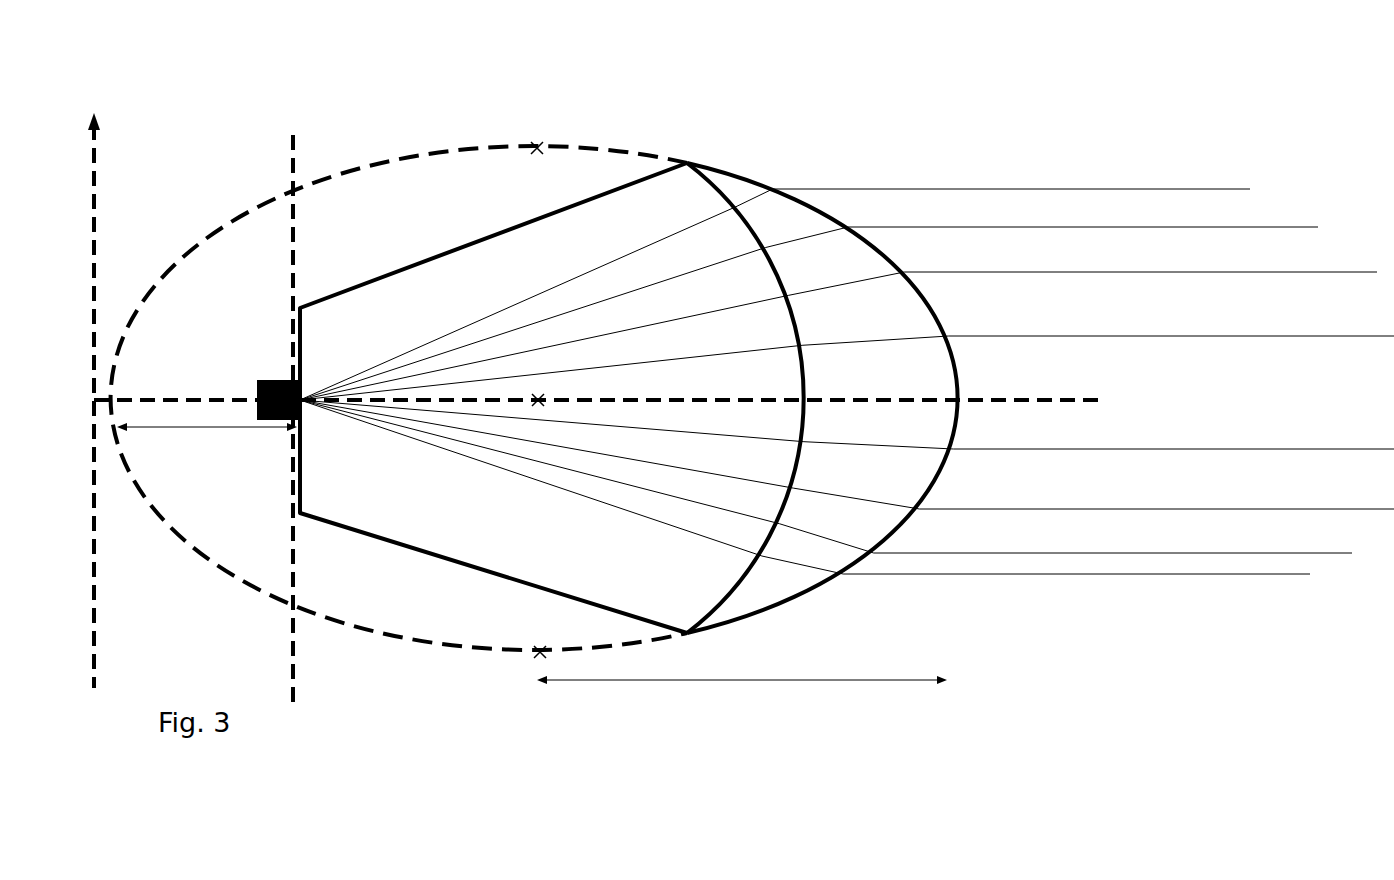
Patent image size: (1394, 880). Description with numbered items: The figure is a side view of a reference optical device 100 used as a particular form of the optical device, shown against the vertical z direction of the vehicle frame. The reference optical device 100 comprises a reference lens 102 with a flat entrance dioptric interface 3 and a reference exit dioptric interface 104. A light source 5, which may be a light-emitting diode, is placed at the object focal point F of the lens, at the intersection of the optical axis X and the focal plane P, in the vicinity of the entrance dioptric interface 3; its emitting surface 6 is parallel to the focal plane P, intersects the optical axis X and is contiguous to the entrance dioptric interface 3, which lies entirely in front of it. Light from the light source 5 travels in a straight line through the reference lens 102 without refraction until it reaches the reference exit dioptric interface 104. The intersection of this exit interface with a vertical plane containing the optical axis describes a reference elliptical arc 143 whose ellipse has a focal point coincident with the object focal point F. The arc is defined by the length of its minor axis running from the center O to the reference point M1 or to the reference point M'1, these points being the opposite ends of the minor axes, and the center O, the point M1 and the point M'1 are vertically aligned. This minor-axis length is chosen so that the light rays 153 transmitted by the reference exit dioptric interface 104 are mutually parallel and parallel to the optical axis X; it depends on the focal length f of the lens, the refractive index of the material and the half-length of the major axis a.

The reference optical device 100 is at (534, 347).
The reference lens 102 is at (517, 225).
The entrance dioptric interface 3 is at (292, 322).
The reference elliptical arc 143 is at (720, 168).
The reference exit dioptric interface 104 is at (770, 213).
The light rays 153 is at (915, 189).
The light source 5 is at (257, 398).
The emitting surface 6 is at (302, 412).
The object focal point F is at (330, 393).
The focal plane P is at (285, 165).
The z direction z is at (72, 389).
The optical axis X is at (1010, 397).
The center of the ellipse O is at (556, 390).
The reference point M1 is at (540, 143).
The reference point M'1 is at (509, 692).
The half-length of the major axis a is at (742, 702).
The focal length f is at (207, 440).